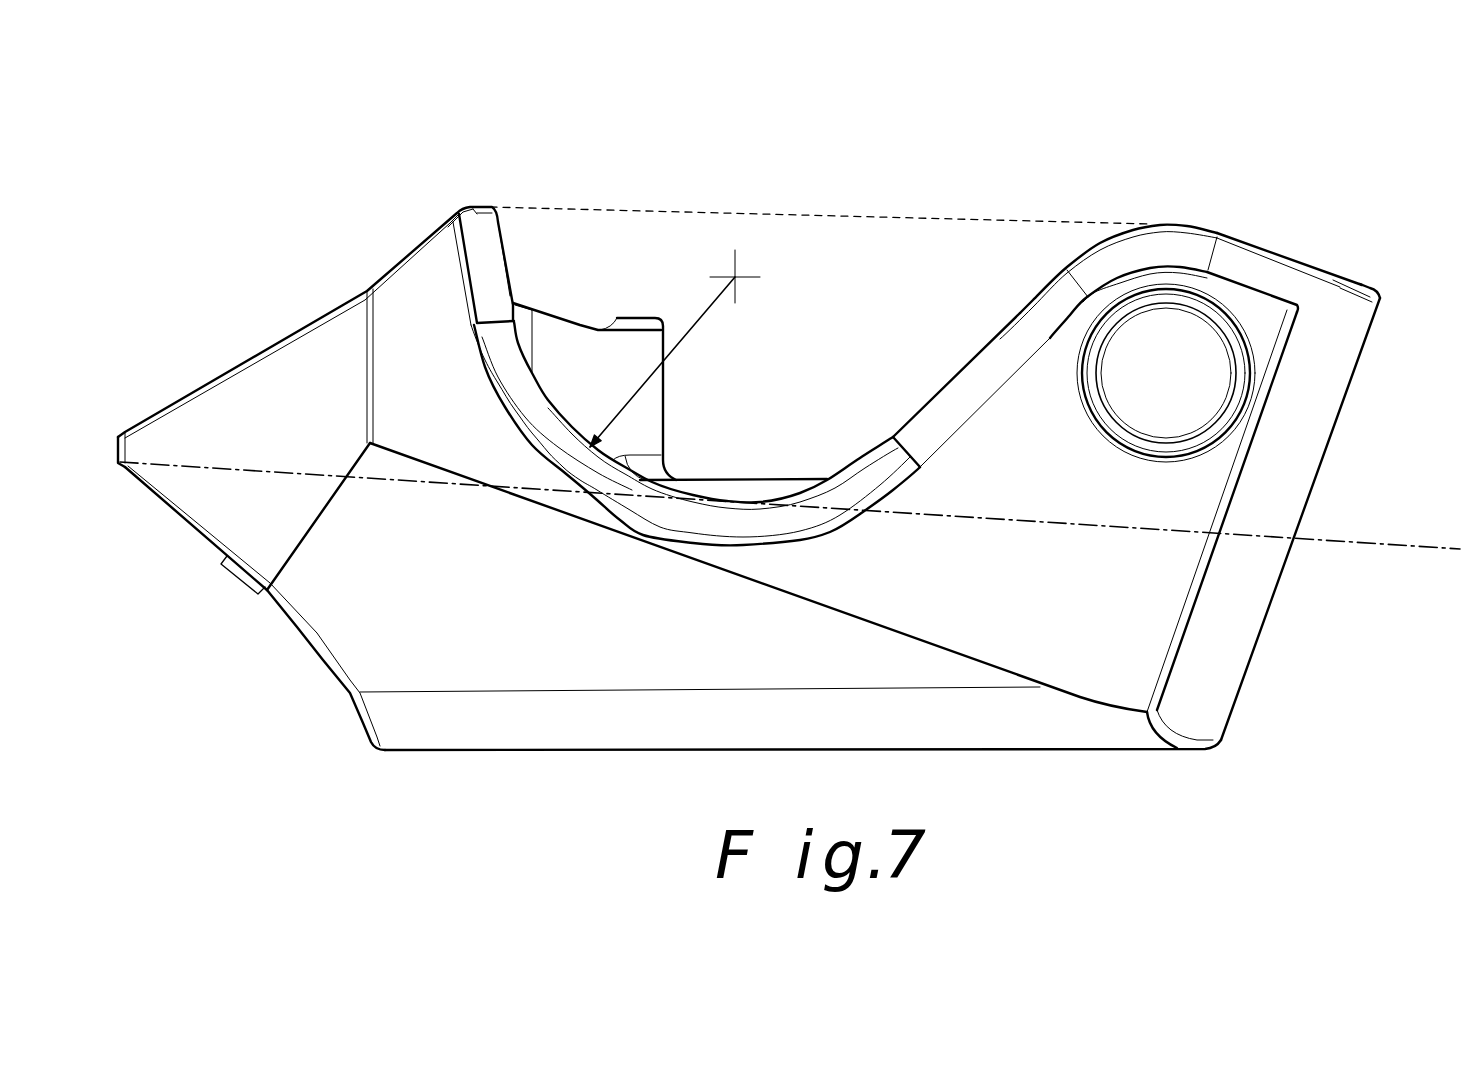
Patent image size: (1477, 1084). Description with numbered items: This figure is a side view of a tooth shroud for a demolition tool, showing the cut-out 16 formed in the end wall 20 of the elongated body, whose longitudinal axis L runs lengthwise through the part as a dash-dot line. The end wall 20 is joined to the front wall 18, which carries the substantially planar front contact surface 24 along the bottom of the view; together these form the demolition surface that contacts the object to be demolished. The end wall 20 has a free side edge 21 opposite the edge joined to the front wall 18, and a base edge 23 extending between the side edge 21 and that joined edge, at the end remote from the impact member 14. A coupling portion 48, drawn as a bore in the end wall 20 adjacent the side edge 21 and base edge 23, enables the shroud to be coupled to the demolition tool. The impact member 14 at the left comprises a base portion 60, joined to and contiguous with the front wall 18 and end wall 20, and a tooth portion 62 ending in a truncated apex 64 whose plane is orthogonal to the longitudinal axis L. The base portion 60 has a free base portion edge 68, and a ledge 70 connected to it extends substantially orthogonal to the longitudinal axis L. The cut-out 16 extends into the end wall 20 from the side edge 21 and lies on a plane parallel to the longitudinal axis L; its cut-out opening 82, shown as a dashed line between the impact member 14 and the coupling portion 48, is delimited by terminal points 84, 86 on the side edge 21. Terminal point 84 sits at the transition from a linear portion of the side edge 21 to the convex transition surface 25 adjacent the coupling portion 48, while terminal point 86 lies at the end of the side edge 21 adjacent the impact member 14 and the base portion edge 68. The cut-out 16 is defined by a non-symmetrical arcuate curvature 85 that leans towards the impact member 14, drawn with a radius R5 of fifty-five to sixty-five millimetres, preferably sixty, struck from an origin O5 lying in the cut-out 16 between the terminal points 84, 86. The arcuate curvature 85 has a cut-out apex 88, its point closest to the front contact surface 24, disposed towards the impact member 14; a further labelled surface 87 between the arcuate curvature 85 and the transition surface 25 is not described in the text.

The impact member 14 is at (277, 291).
The cut-out 16 is at (853, 250).
The front wall 18 is at (352, 725).
The end wall 20 is at (1338, 445).
The side edge 21 is at (1243, 240).
The base edge 23 is at (1377, 314).
The front contact surface 24 is at (486, 750).
The transition surface 25 is at (1105, 240).
The coupling portion 48 is at (1247, 312).
The base portion 60 is at (347, 613).
The tooth portion 62 is at (215, 497).
The apex 64 is at (118, 447).
The base portion edge 68 is at (503, 256).
The ledge 70 is at (466, 206).
The cut-out opening 82 is at (747, 212).
The terminal point 84 is at (1153, 223).
The arcuate curvature 85 is at (563, 415).
The terminal point 86 is at (490, 207).
The ramp 87 is at (963, 363).
The cut-out apex 88 is at (660, 505).
The origin O5 is at (740, 273).
The radius R5 is at (703, 320).
The longitudinal axis L is at (1377, 546).